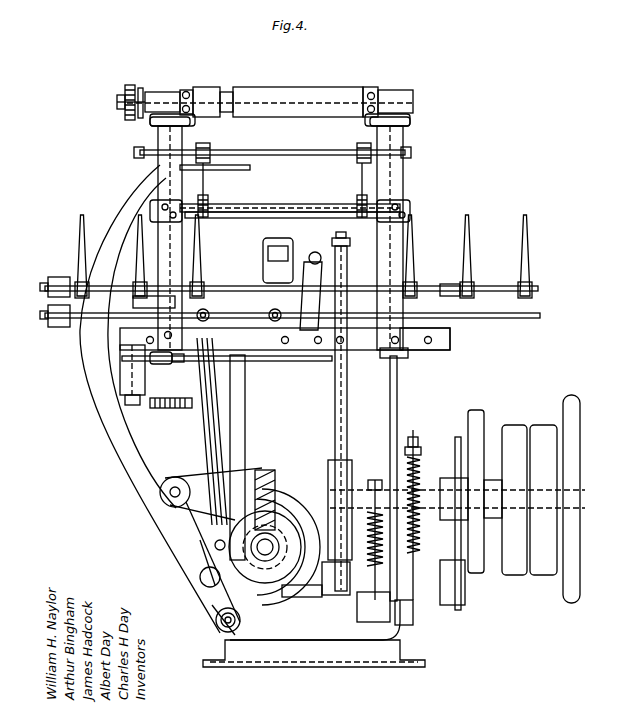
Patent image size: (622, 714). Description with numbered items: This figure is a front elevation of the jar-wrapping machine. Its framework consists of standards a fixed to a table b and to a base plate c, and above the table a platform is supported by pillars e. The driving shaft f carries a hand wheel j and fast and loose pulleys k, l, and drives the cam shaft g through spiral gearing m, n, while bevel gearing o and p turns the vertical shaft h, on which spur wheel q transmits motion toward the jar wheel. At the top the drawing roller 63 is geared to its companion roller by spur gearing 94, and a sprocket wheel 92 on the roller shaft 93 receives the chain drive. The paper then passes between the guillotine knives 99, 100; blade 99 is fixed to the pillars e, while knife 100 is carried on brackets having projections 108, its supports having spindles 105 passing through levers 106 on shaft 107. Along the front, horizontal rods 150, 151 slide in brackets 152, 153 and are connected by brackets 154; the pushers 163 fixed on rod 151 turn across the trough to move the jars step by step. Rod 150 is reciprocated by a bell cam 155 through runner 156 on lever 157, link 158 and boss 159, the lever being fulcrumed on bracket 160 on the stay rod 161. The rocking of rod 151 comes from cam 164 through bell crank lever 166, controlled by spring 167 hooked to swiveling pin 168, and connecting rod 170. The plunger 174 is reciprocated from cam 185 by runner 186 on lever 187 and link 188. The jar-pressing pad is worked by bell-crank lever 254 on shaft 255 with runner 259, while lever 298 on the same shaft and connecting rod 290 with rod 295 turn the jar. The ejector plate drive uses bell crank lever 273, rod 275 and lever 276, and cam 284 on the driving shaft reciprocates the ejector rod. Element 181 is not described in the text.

The drawing roller 63 is at (292, 96).
The sprocket wheel 92 is at (141, 88).
The shaft 93 is at (117, 101).
The spur gearing 94 is at (129, 85).
The guillotine knife 99 is at (282, 204).
The guillotine knife 100 is at (216, 218).
The spindle 105 is at (205, 178).
The lever 106 is at (212, 148).
The shaft 107 is at (272, 150).
The projection 108 is at (360, 148).
The horizontal rod 150 is at (50, 320).
The horizontal rod 151 is at (226, 286).
The bracket 152 is at (142, 300).
The bracket 153 is at (408, 352).
The bracket 154 is at (56, 277).
The bell cam 155 is at (296, 597).
The runner 156 is at (214, 544).
The lever 157 is at (250, 362).
The link 158 is at (221, 305).
The boss 159 is at (269, 305).
The bracket 160 is at (240, 618).
The stay rod 161 is at (292, 583).
The pusher 163 is at (84, 222).
The cam 164 is at (457, 440).
The bell crank lever 166 is at (415, 470).
The spring 167 is at (418, 440).
The swiveling pin 168 is at (462, 600).
The connecting rod 170 is at (405, 618).
The plunger 174 is at (288, 236).
The lever 181 is at (317, 252).
The cam 185 is at (330, 440).
The runner 186 is at (335, 454).
The lever 187 is at (348, 268).
The link 188 is at (346, 240).
The bell-crank lever 254 is at (204, 578).
The shaft 255 is at (160, 492).
The runner 259 is at (214, 610).
The bell crank lever 273 is at (161, 365).
The rod 275 is at (278, 364).
The lever 276 is at (398, 374).
The cam 284 is at (478, 408).
The connecting rod 290 is at (224, 175).
The rod 295 is at (93, 428).
The lever 298 is at (205, 556).
The standard a is at (246, 395).
The table b is at (450, 334).
The base plate c is at (328, 667).
The pillar e is at (184, 140).
The driving shaft f is at (583, 496).
The cam shaft g is at (318, 600).
The vertical shaft h is at (180, 362).
The hand wheel j is at (567, 395).
The fast pulley k is at (543, 500).
The loose pulley l is at (514, 500).
The spiral gear m is at (276, 476).
The spiral gear n is at (292, 492).
The bevel gear o is at (222, 482).
The bevel gear p is at (168, 478).
The spur wheel q is at (165, 409).